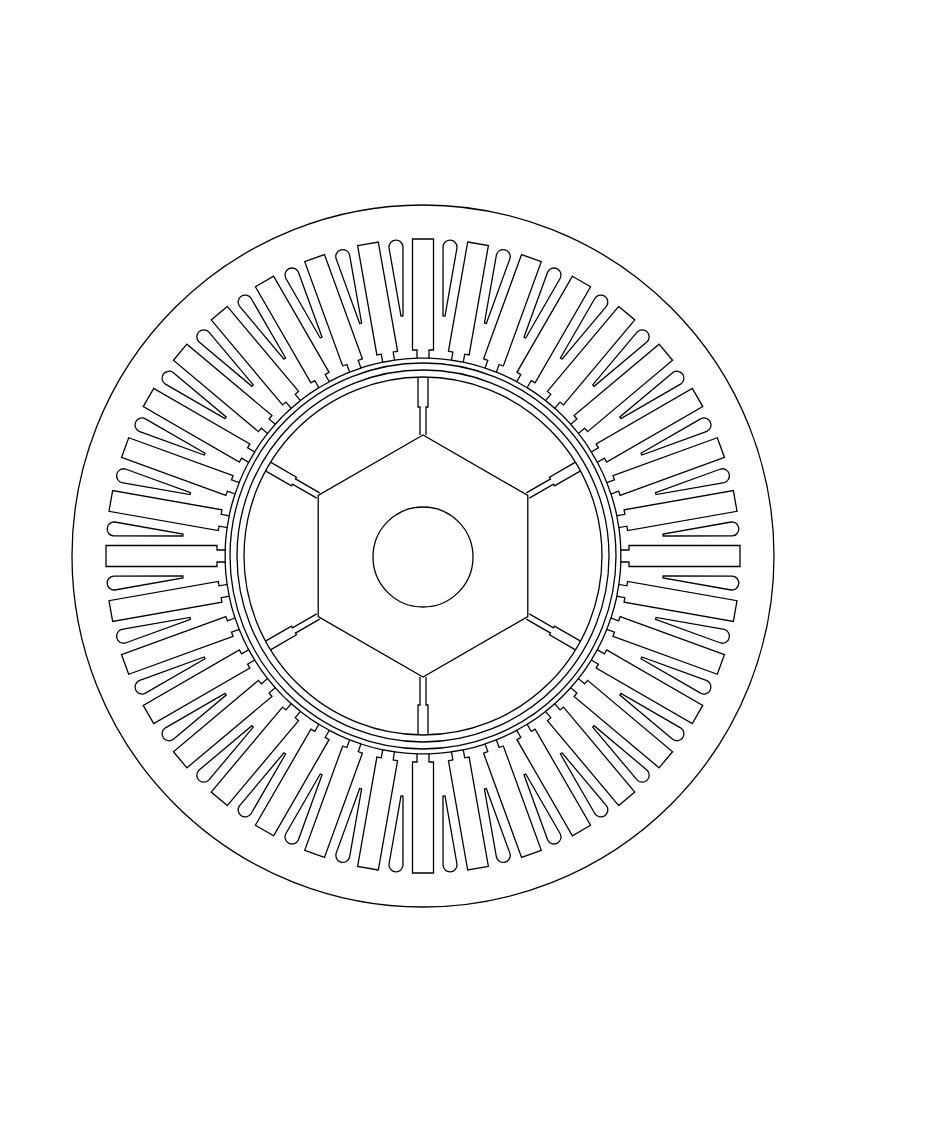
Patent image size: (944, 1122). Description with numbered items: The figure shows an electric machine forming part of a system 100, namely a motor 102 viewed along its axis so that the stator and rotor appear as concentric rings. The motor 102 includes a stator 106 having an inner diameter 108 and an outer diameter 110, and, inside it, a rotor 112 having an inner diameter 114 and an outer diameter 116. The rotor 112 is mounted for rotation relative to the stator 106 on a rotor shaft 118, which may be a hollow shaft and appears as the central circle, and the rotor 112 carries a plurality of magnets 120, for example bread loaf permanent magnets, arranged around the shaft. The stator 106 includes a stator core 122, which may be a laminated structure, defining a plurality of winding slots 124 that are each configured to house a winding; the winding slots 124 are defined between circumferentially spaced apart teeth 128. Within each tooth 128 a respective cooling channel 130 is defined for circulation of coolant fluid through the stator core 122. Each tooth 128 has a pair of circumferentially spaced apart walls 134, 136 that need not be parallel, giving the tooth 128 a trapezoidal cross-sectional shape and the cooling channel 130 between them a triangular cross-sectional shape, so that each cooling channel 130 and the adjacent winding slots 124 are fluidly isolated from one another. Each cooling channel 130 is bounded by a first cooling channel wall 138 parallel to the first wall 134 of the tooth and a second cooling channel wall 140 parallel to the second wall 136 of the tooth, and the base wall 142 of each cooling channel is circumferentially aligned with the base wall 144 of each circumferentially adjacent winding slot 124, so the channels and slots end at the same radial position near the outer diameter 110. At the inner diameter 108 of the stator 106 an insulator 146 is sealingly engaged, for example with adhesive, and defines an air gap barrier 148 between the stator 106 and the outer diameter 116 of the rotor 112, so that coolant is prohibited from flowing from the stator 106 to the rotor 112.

The system 100 is at (83, 96).
The motor 102 is at (675, 193).
The stator 106 is at (690, 326).
The inner diameter 108 is at (677, 381).
The outer diameter 110 is at (678, 298).
The rotor 112 is at (416, 454).
The inner diameter 114 is at (440, 504).
The outer diameter 116 is at (506, 378).
The rotor shaft 118 is at (407, 562).
The magnets 120 is at (488, 656).
The stator core 122 is at (227, 289).
The winding slots 124 is at (213, 316).
The teeth 128 is at (241, 386).
The cooling channel 130 is at (292, 272).
The circumferentially spaced apart wall 134 is at (753, 467).
The circumferentially spaced apart wall 136 is at (733, 481).
The first cooling channel wall 138 is at (714, 572).
The second cooling channel wall 140 is at (720, 589).
The base wall 142 is at (710, 690).
The base wall 144 is at (699, 710).
The insulator 146 is at (400, 738).
The air gap barrier 148 is at (453, 738).